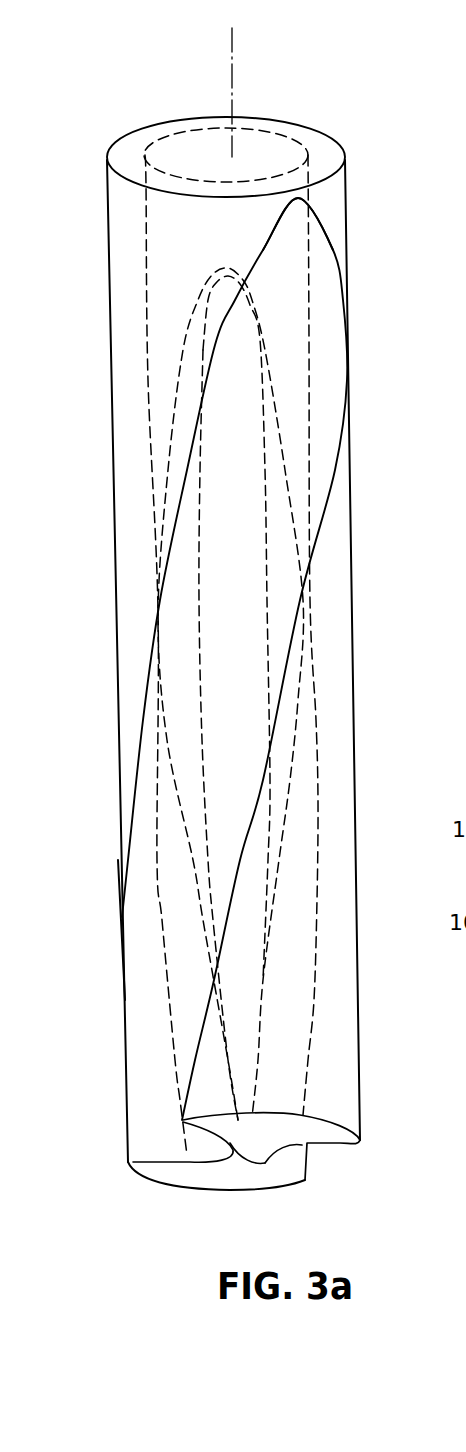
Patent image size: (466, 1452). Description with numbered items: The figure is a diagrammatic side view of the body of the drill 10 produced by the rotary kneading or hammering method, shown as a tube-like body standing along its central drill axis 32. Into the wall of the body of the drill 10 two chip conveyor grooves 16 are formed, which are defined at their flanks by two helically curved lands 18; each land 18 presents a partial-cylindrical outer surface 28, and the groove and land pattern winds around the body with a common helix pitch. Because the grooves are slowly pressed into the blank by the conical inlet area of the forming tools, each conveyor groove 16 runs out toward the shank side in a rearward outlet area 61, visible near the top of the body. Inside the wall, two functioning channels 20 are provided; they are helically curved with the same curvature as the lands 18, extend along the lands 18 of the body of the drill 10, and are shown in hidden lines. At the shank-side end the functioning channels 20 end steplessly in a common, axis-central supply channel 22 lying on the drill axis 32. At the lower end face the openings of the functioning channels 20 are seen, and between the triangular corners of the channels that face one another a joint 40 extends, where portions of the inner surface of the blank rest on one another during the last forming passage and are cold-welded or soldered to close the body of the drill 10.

The body of the drill 10 is at (126, 490).
The axis-central supply channel 22 is at (157, 255).
The drill axis 32 is at (232, 68).
The helically curved lands 18 is at (122, 696).
The partial-cylindrical outer surface 28 is at (333, 999).
The rearward outlet area 61 is at (283, 248).
The conveyor grooves 16 is at (195, 947).
The joint 40 is at (220, 1142).
The functioning channels 20 is at (223, 1167).